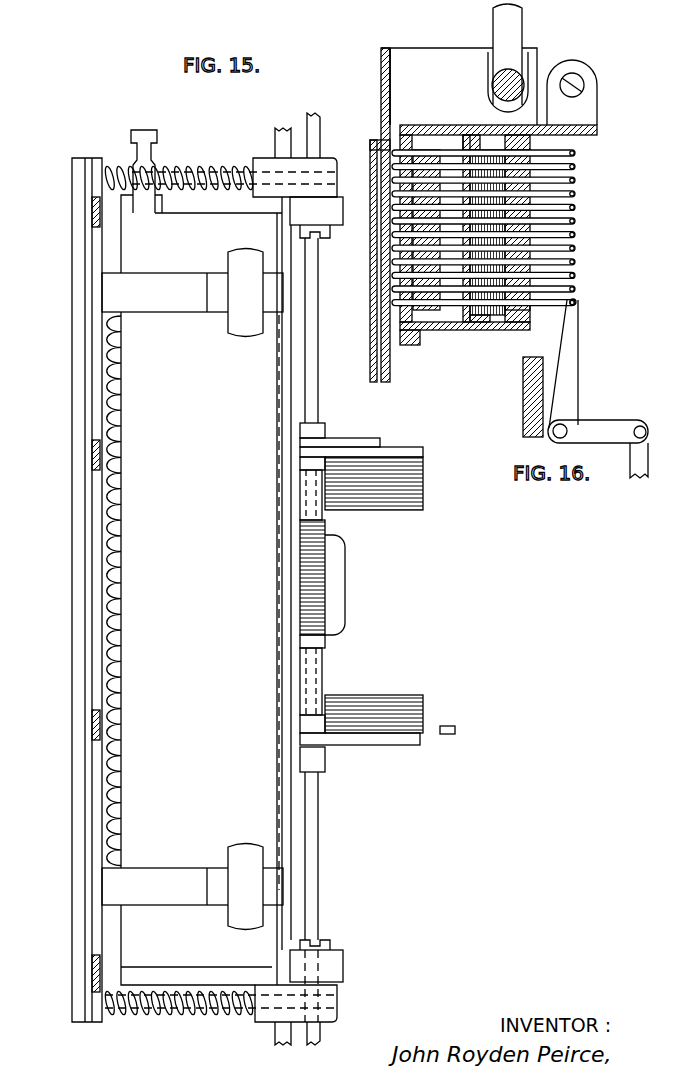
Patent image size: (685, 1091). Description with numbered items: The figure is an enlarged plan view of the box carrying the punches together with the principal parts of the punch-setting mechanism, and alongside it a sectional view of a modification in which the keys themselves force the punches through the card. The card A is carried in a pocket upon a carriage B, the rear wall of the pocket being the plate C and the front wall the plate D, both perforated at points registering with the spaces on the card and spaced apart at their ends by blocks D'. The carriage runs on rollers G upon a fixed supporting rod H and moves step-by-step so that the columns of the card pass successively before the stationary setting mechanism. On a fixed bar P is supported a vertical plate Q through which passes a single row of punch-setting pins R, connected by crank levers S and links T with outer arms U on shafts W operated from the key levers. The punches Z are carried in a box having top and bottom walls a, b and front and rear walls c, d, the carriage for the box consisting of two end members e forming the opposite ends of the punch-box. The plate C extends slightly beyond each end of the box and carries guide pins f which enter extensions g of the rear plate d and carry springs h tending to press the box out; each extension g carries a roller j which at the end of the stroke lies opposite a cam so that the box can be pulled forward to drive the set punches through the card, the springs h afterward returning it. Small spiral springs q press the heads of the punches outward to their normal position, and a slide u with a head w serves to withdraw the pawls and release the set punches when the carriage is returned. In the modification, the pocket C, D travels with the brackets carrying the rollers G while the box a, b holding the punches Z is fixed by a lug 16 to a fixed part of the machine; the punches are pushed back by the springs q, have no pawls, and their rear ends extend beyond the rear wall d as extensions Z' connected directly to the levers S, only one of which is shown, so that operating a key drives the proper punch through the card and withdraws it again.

In FIG. 15, the card A is at (95, 728).
In FIG. 16, the card A is at (380, 88).
In FIG. 15, the carriage B is at (192, 589).
In FIG. 16, the carriage B is at (463, 86).
In FIG. 15, the rear wall of the pocket C is at (95, 565).
In FIG. 16, the rear wall of the pocket C is at (384, 50).
In FIG. 15, the front wall of the pocket D is at (60, 590).
In FIG. 16, the front wall of the pocket D is at (365, 215).
In FIG. 15, the blocks D' is at (65, 977).
In FIG. 15, the rollers G is at (240, 325).
In FIG. 16, the rollers G is at (493, 18).
In FIG. 16, the fixed supporting rod H is at (492, 95).
In FIG. 15, the fixed bar P is at (292, 388).
In FIG. 16, the fixed bar P is at (523, 408).
In FIG. 15, the vertical plate Q is at (293, 655).
In FIG. 15, the punch-setting pins R is at (335, 590).
In FIG. 15, the crank levers S is at (340, 455).
In FIG. 16, the crank levers S is at (578, 355).
In FIG. 15, the links T is at (398, 448).
In FIG. 15, the outer arms U is at (350, 440).
In FIG. 15, the shafts W is at (318, 413).
In FIG. 15, the punches Z is at (135, 591).
In FIG. 16, the punches Z is at (483, 235).
In FIG. 16, the extensions Z' is at (594, 282).
In FIG. 15, the top wall a is at (199, 599).
In FIG. 16, the top wall a is at (413, 125).
In FIG. 16, the bottom wall b is at (440, 332).
In FIG. 16, the front wall of the box c is at (405, 345).
In FIG. 16, the rear wall of the box d is at (530, 315).
In FIG. 15, the end members e is at (215, 213).
In FIG. 15, the guide pins f is at (203, 168).
In FIG. 15, the extensions g is at (337, 172).
In FIG. 15, the springs h is at (228, 172).
In FIG. 15, the roller j is at (343, 212).
In FIG. 16, the spiral springs q is at (493, 335).
In FIG. 15, the slide u is at (133, 175).
In FIG. 15, the head w is at (147, 130).
In FIG. 16, the lug 16 is at (585, 112).